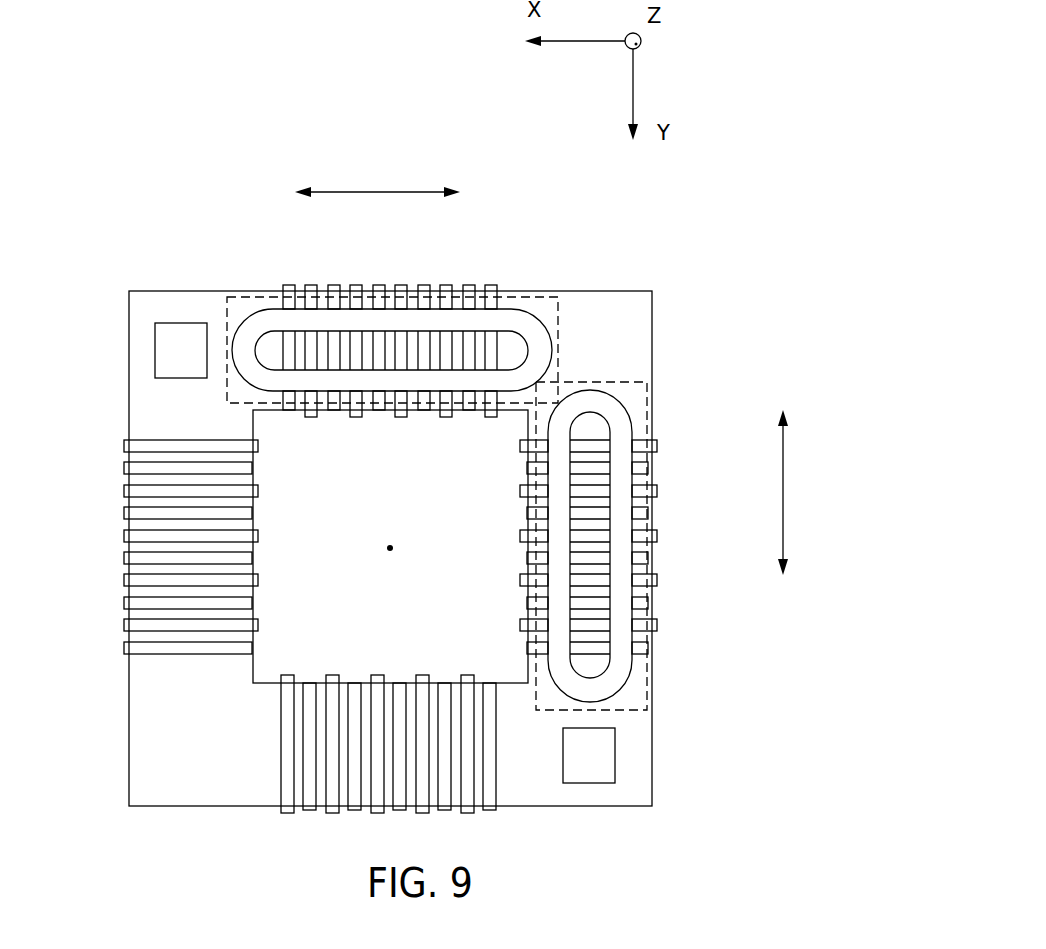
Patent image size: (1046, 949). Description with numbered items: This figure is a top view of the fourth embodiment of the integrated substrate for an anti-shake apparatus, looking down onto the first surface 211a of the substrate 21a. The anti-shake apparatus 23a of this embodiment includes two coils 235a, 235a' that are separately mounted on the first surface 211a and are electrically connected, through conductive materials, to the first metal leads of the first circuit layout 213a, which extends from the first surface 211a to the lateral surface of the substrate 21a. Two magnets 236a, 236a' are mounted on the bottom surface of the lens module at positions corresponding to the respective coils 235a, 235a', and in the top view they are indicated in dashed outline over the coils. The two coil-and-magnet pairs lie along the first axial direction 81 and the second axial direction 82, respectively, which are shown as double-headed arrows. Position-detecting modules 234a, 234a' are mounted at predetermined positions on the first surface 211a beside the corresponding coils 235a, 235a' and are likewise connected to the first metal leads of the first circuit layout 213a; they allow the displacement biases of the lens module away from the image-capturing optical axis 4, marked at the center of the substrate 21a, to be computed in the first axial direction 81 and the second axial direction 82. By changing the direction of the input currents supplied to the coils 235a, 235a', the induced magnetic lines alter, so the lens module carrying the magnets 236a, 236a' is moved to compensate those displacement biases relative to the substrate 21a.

The image-capturing optical axis 4 is at (393, 546).
The substrate 21a is at (652, 787).
The anti-shake apparatus 23a is at (566, 280).
The first axial direction 81 is at (380, 192).
The second axial direction 82 is at (783, 510).
The first surface 211a is at (613, 320).
The first circuit layout 213a is at (659, 569).
The position-detecting module 234a is at (131, 325).
The position-detecting module 234a' is at (654, 754).
The coil 235a is at (392, 308).
The coil 235a' is at (648, 546).
The magnet 236a is at (357, 300).
The magnet 236a' is at (644, 533).